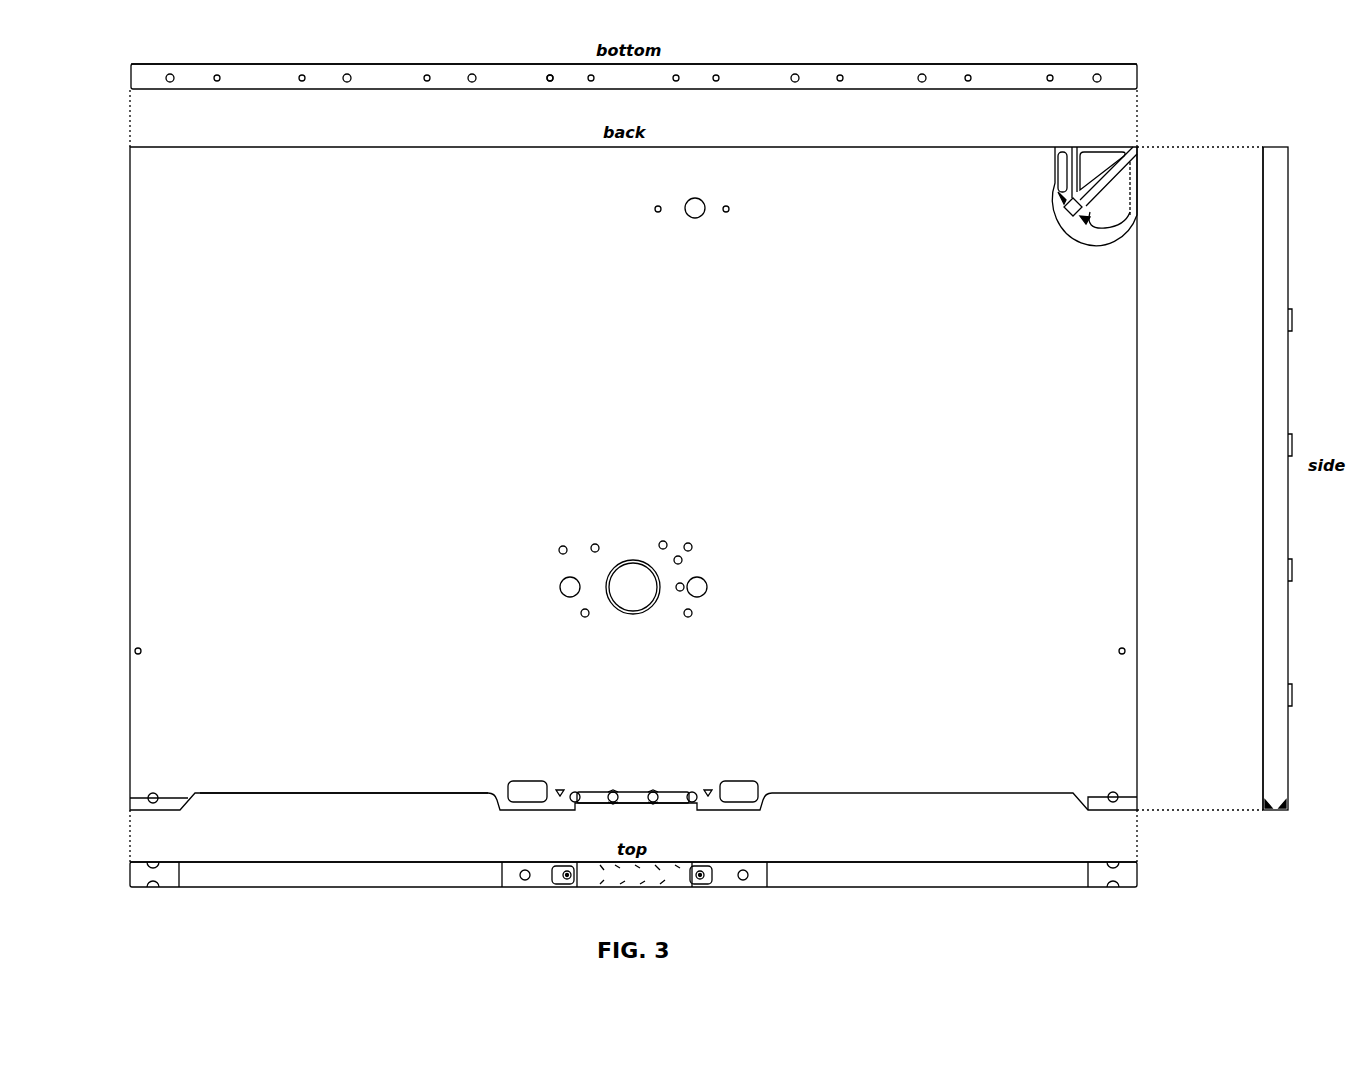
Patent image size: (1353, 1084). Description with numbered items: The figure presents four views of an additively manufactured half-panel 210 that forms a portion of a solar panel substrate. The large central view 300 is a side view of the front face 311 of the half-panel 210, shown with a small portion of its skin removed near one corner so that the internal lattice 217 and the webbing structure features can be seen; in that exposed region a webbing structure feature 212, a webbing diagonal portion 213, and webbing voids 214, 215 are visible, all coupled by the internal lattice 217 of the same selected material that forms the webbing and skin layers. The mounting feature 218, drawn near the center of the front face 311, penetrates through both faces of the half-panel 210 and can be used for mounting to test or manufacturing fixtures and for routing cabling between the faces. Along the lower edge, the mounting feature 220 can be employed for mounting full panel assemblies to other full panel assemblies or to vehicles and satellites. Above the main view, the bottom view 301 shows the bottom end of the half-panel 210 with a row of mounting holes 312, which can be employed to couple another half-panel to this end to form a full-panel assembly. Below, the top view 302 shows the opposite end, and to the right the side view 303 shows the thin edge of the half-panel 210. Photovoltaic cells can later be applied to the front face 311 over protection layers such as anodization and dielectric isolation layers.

The view 300 is at (122, 174).
The view 301 is at (122, 71).
The view 302 is at (118, 866).
The view 303 is at (1270, 127).
The half-panel 210 is at (202, 58).
The webbing structure feature 212 is at (1087, 160).
The webbing diagonal portion 213 is at (1104, 193).
The webbing void 214 is at (1108, 220).
The webbing void 215 is at (1071, 212).
The internal lattice structure 217 is at (1080, 182).
The mounting feature 218 is at (652, 611).
The mounting feature 220 is at (604, 812).
The front face 311 is at (344, 789).
The mounting hole 312 is at (547, 82).